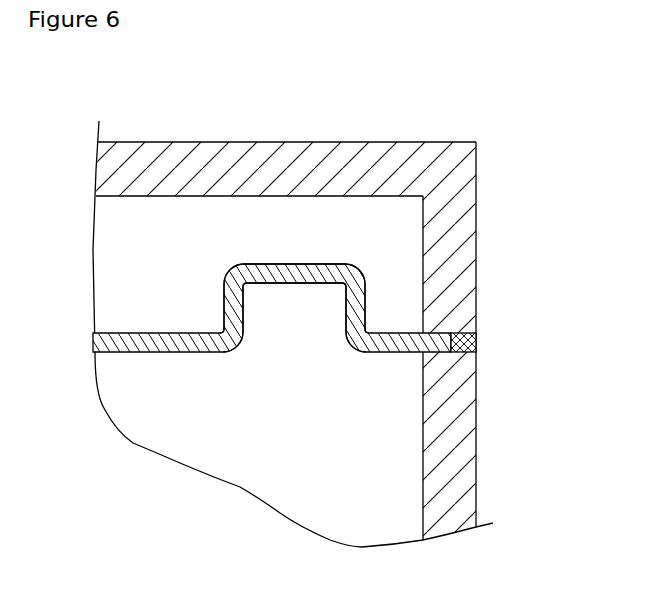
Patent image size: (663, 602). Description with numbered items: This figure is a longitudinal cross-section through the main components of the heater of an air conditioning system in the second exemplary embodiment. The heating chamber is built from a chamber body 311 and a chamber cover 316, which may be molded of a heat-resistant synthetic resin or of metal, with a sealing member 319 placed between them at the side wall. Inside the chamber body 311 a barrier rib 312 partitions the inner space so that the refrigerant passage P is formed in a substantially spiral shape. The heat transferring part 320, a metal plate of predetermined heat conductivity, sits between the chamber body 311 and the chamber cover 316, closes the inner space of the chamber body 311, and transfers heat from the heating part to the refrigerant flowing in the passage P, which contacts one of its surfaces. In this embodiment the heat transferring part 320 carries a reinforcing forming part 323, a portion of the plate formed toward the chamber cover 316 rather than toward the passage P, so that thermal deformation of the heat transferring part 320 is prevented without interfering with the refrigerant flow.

The chamber body 311 is at (477, 433).
The barrier rib 312 is at (393, 392).
The chamber cover 316 is at (477, 227).
The sealing member 319 is at (477, 342).
The heat transferring part 320 is at (150, 333).
The reinforcing forming part 323 is at (288, 264).
The passage P is at (300, 437).